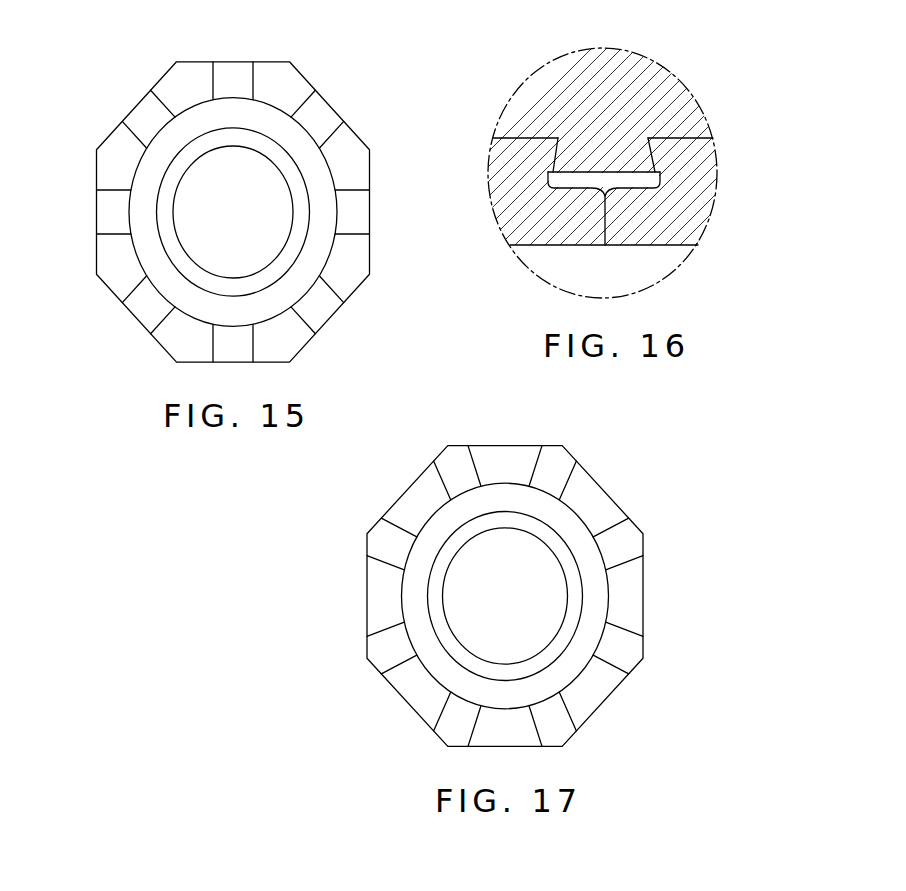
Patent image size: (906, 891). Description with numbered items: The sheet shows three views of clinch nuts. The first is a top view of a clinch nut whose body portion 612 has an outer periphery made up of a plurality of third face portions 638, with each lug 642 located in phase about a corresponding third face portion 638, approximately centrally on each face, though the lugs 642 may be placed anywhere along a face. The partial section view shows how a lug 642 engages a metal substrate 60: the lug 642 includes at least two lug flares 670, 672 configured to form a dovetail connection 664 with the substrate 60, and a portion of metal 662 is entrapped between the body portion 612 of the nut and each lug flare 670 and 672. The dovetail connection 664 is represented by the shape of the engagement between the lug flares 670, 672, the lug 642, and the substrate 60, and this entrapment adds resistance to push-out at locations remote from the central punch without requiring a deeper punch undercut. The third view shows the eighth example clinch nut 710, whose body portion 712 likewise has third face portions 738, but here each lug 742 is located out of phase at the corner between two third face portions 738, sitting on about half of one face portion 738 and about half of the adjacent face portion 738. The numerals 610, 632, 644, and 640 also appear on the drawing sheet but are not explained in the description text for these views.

In FIG. 15, the nut assembly 610 is at (117, 98).
In FIG. 15, the nut body 632 is at (110, 168).
In FIG. 15, the body portion 612 is at (93, 262).
In FIG. 16, the body portion 612 is at (690, 59).
In FIG. 15, the tab 644 is at (228, 73).
In FIG. 15, the lug 642 is at (318, 117).
In FIG. 16, the lug 642 is at (640, 155).
In FIG. 15, the third face portion 638 is at (268, 62).
In FIG. 16, the third face portion 638 is at (563, 82).
In FIG. 15, the inner ring 640 is at (315, 250).
In FIG. 16, the substrate 60 is at (515, 203).
In FIG. 16, the portion of metal 662 is at (546, 143).
In FIG. 16, the lug flare 670 is at (557, 170).
In FIG. 16, the lug flare 672 is at (655, 167).
In FIG. 16, the dovetail connection 664 is at (604, 240).
In FIG. 17, the clinch nut 710 is at (375, 507).
In FIG. 17, the body portion 712 is at (360, 593).
In FIG. 17, the lug 742 is at (557, 468).
In FIG. 17, the third face portion 738 is at (607, 697).